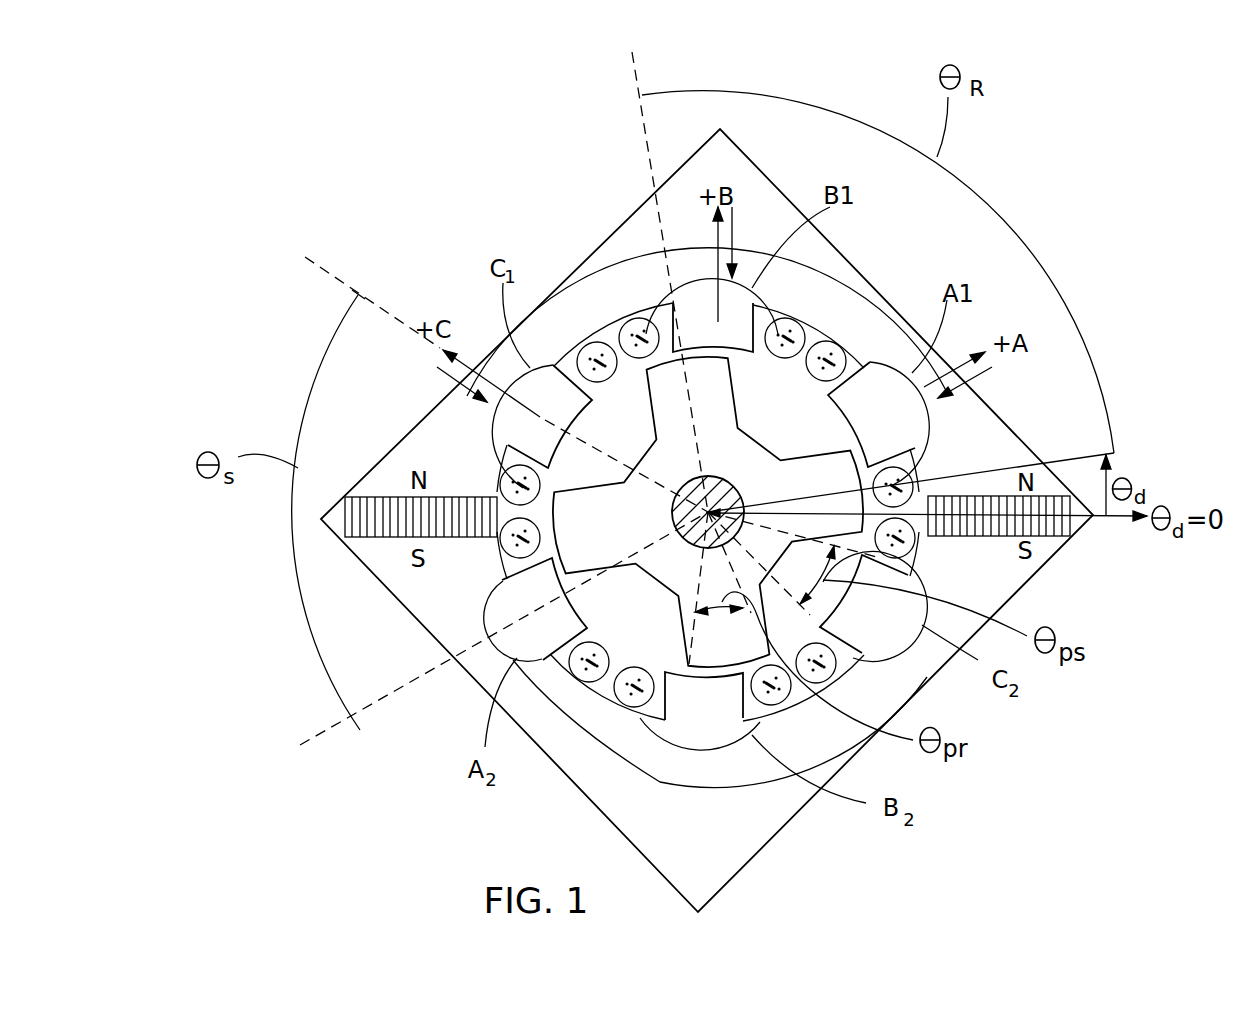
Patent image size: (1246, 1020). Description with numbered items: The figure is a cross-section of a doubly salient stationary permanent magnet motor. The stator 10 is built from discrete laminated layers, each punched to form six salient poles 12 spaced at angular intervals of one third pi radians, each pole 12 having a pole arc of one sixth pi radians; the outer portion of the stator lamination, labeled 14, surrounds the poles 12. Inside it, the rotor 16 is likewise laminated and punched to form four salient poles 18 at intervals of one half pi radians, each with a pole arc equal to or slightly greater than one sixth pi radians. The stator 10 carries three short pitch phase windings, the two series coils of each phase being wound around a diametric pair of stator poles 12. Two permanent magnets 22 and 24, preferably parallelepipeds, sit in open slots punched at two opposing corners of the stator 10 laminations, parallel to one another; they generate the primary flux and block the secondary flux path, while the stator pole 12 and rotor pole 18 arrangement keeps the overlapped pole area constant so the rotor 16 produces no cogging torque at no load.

The stator 10 is at (717, 489).
The salient pole 12 is at (690, 342).
The stator 14 is at (843, 288).
The rotor 16 is at (708, 512).
The salient pole 18 is at (694, 392).
The permanent magnet 22 is at (387, 537).
The permanent magnet 24 is at (1047, 537).